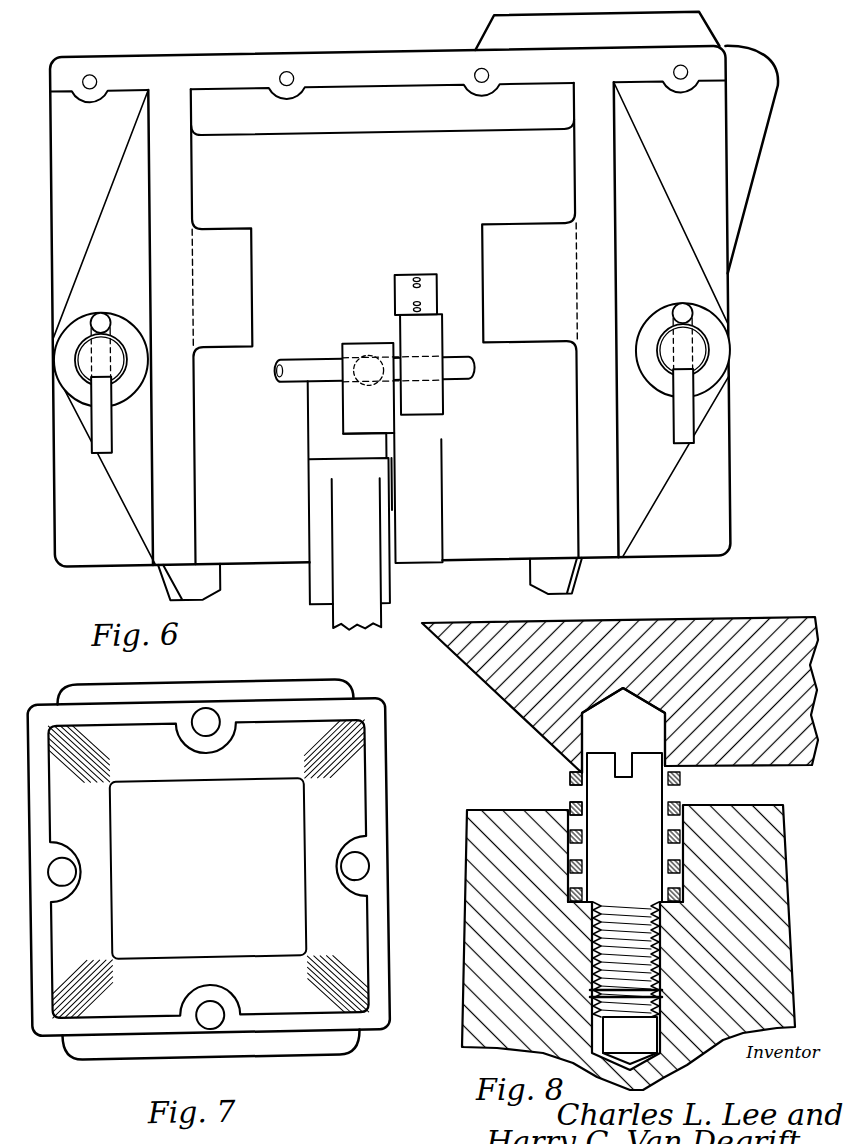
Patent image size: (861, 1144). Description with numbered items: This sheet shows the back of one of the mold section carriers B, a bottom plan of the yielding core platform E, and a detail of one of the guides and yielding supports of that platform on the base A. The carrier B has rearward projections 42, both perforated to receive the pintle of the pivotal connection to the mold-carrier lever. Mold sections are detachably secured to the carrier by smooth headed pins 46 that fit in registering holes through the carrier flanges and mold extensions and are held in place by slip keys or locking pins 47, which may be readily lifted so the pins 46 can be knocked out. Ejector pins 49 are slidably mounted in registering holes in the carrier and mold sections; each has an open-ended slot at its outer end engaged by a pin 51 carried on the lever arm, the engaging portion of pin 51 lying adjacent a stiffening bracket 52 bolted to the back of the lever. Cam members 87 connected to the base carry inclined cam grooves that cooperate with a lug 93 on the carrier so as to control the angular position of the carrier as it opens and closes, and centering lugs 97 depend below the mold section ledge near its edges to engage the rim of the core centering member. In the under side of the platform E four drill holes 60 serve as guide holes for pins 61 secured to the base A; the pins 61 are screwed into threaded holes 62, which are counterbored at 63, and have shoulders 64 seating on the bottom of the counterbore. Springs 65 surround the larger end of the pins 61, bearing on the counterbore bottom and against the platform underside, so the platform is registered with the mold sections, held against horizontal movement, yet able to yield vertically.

In FIG. 6, the rearward projections 42 is at (569, 238).
In FIG. 6, the pins 46 is at (667, 367).
In FIG. 6, the slip keys or locking pins 47 is at (687, 433).
In FIG. 6, the ejector pins 49 is at (360, 352).
In FIG. 6, the pin 51 is at (450, 360).
In FIG. 6, the stiffening bracket 52 is at (433, 403).
In FIG. 6, the cam members 87 is at (315, 450).
In FIG. 6, the lug 93 is at (415, 566).
In FIG. 6, the centering lugs 97 is at (210, 578).
In FIG. 7, the drill holes 60 is at (357, 870).
In FIG. 8, the drill holes 60 is at (637, 723).
In FIG. 8, the pins 61 is at (640, 807).
In FIG. 8, the threaded holes 62 is at (655, 997).
In FIG. 8, the counterbore 63 is at (677, 855).
In FIG. 8, the shoulders 64 is at (590, 905).
In FIG. 8, the springs 65 is at (567, 800).
In FIG. 6, the carriers B is at (390, 188).
In FIG. 7, the platform E is at (209, 883).
In FIG. 8, the platform E is at (722, 637).
In FIG. 8, the base A is at (490, 980).